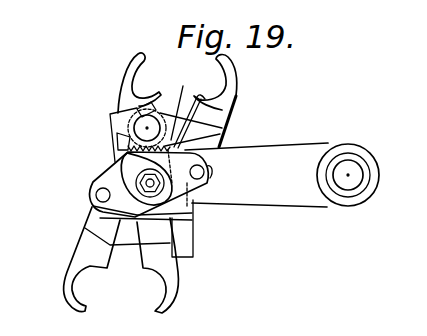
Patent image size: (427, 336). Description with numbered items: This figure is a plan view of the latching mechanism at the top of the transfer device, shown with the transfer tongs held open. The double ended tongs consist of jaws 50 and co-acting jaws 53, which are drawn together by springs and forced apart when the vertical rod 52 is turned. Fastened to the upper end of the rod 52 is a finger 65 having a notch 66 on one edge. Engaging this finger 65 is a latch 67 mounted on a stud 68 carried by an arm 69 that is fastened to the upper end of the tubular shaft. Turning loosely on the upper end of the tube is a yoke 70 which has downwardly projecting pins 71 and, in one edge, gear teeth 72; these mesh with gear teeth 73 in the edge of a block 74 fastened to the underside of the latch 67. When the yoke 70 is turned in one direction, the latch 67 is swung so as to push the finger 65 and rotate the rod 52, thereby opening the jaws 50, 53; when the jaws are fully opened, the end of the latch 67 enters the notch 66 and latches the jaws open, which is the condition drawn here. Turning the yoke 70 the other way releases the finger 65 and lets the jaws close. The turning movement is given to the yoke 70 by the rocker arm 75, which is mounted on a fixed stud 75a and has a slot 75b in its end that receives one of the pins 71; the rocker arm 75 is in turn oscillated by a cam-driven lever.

The jaws 50 is at (122, 72).
The vertical rod 52 is at (197, 217).
The jaws 53 is at (235, 86).
The finger 65 is at (113, 160).
The notch 66 is at (118, 146).
The latch 67 is at (186, 102).
The stud 68 is at (147, 127).
The arm 69 is at (223, 130).
The yoke 70 is at (96, 187).
The pins 71 is at (97, 197).
The gear teeth 72 is at (188, 112).
The gear teeth 73 is at (117, 133).
The block 74 is at (130, 112).
The rocker arm 75 is at (282, 155).
The fixed stud 75a is at (352, 152).
The slot 75b is at (213, 172).